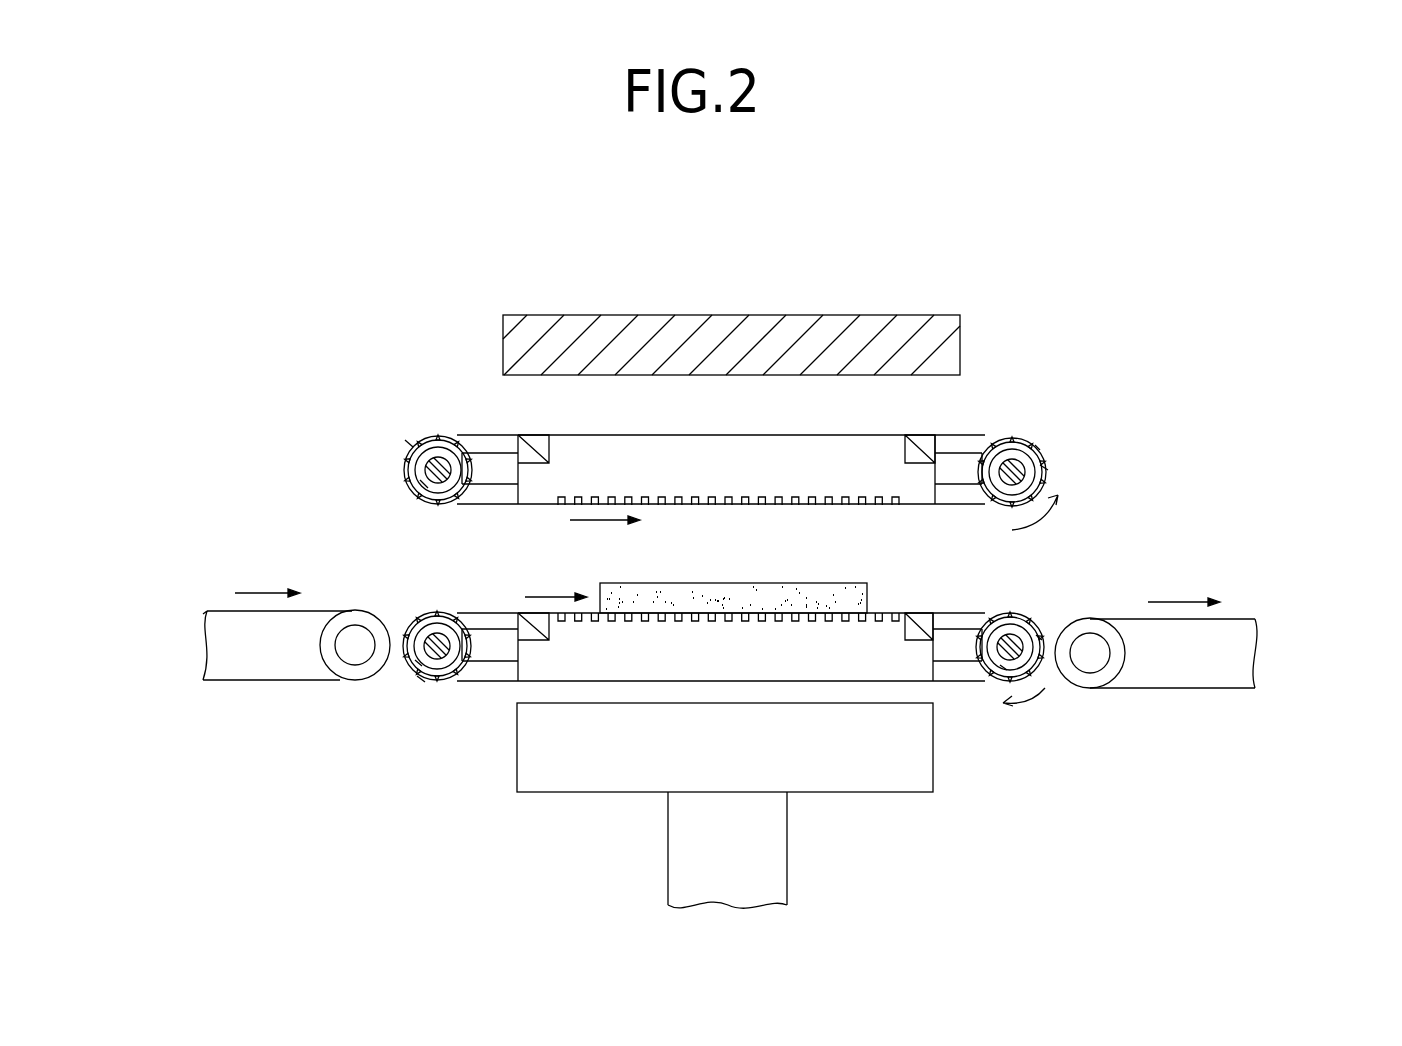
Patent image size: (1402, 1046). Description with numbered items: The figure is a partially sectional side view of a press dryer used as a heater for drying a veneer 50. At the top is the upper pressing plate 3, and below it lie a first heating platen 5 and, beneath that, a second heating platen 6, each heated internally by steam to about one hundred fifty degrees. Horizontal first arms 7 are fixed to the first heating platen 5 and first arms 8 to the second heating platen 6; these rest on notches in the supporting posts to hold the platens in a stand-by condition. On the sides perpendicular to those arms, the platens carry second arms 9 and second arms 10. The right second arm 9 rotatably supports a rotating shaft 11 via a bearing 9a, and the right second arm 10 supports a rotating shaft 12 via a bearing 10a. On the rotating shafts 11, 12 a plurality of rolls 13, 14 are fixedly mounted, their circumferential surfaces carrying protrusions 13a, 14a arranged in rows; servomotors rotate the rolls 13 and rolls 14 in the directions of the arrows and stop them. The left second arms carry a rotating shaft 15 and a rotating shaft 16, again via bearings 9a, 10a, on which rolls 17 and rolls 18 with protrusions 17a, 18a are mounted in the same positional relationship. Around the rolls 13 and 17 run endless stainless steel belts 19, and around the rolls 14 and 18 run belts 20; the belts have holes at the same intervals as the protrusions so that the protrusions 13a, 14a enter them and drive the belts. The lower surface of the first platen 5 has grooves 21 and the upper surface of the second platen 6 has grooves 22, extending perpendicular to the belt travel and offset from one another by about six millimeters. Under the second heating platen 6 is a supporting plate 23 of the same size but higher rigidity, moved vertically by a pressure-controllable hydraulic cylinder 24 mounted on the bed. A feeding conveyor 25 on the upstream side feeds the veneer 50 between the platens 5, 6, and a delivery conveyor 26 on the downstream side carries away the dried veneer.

The upper pressing plate 3 is at (685, 324).
The first heating platen 5 is at (847, 457).
The second heating platen 6 is at (895, 670).
The first arms 7 is at (533, 448).
The first arms 8 is at (535, 628).
The second arms 9 is at (493, 472).
The bearing 9a is at (423, 482).
The second arms 10 is at (487, 647).
The bearing 10a is at (422, 655).
The rotating shaft 11 is at (1023, 480).
The rotating shaft 12 is at (1023, 648).
The rolls 13 is at (1017, 442).
The protrusions 13a is at (1047, 460).
The rolls 14 is at (1042, 662).
The protrusions 14a is at (1040, 640).
The rotating shaft 15 is at (427, 465).
The rotating shaft 16 is at (440, 638).
The rolls 17 is at (432, 437).
The protrusions 17a is at (417, 447).
The rolls 18 is at (412, 622).
The protrusions 18a is at (435, 682).
The belts 19 is at (487, 437).
The belts 20 is at (498, 682).
The grooves 21 is at (807, 500).
The grooves 22 is at (843, 620).
The supporting plate 23 is at (615, 772).
The hydraulic cylinder 24 is at (773, 892).
The feeding conveyor 25 is at (202, 637).
The delivery conveyor 26 is at (1238, 655).
The veneer 50 is at (670, 597).